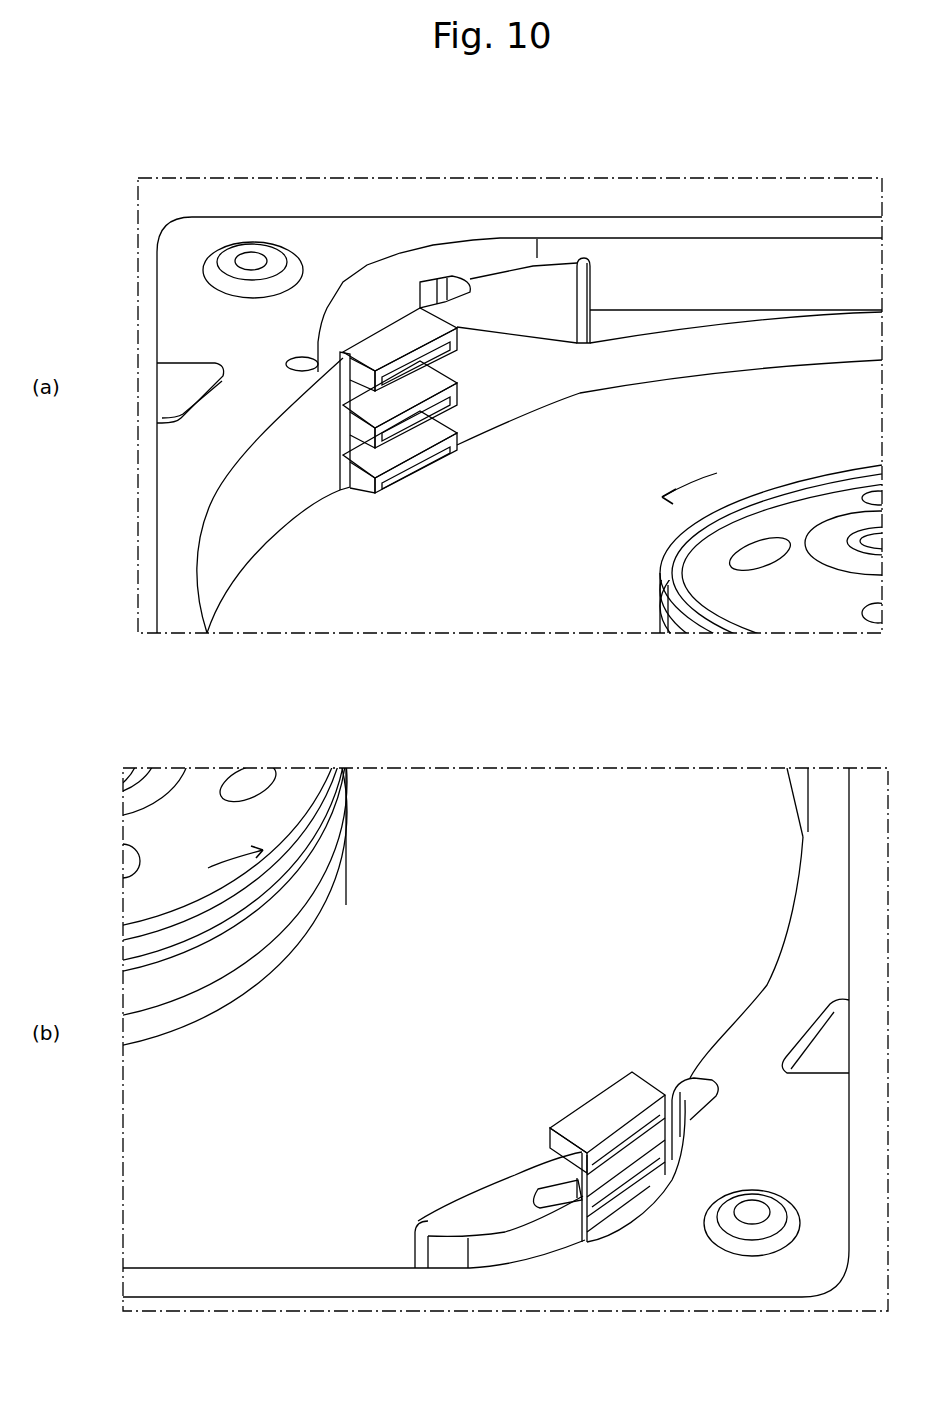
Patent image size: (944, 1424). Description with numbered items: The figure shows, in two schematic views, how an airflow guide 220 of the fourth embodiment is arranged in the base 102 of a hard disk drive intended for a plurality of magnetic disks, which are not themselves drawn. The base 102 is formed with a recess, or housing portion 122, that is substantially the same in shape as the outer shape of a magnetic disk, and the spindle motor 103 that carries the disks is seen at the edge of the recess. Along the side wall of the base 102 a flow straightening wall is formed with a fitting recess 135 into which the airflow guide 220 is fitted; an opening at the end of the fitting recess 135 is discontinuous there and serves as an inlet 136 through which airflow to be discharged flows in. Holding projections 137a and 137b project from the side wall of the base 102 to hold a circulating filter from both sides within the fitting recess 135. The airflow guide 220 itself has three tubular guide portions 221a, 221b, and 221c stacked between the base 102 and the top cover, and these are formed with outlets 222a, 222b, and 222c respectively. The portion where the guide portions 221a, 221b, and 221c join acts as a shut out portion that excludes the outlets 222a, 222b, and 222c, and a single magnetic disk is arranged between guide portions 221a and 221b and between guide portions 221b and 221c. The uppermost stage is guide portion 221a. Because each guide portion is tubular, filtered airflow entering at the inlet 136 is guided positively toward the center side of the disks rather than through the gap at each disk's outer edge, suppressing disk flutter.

The base 102 is at (167, 473).
The spindle motor 103 is at (780, 488).
The recess (housing portion) 122 is at (424, 620).
The fitting recess 135 is at (358, 300).
The inlet 136 is at (592, 299).
The holding projection 137a is at (306, 361).
The holding projection 137b is at (430, 282).
The airflow guide 220 is at (473, 764).
The tubular guide portion 221a is at (504, 730).
The tubular guide portion 221b is at (407, 410).
The tubular guide portion 221c is at (405, 476).
The outlet 222a is at (449, 345).
The outlet 222b is at (449, 390).
The outlet 222c is at (453, 450).